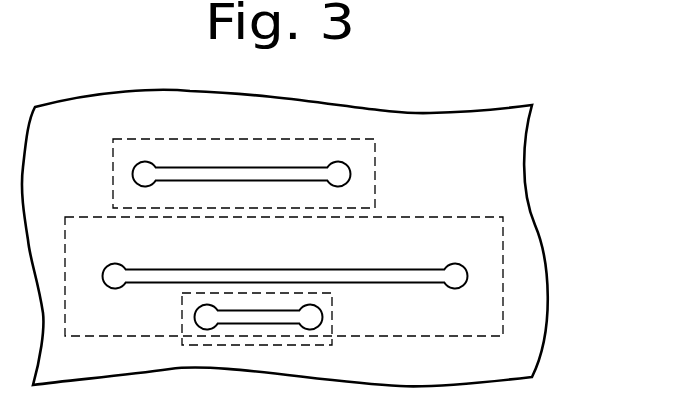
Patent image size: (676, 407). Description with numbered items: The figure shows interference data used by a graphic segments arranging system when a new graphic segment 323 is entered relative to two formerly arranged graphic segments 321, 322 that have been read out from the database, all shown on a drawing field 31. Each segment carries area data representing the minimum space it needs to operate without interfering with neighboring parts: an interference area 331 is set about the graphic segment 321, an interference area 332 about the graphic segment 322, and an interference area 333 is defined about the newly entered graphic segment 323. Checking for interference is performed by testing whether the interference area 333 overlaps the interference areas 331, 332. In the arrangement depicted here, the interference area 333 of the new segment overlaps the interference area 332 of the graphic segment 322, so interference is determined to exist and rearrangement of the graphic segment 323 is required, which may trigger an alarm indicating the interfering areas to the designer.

The substrate 31 is at (525, 140).
The graphic segment 321 is at (350, 174).
The graphic segment 322 is at (457, 265).
The graphic segment 323 is at (333, 312).
The interference area 331 is at (375, 142).
The interference area 332 is at (483, 217).
The interference area 333 is at (334, 346).